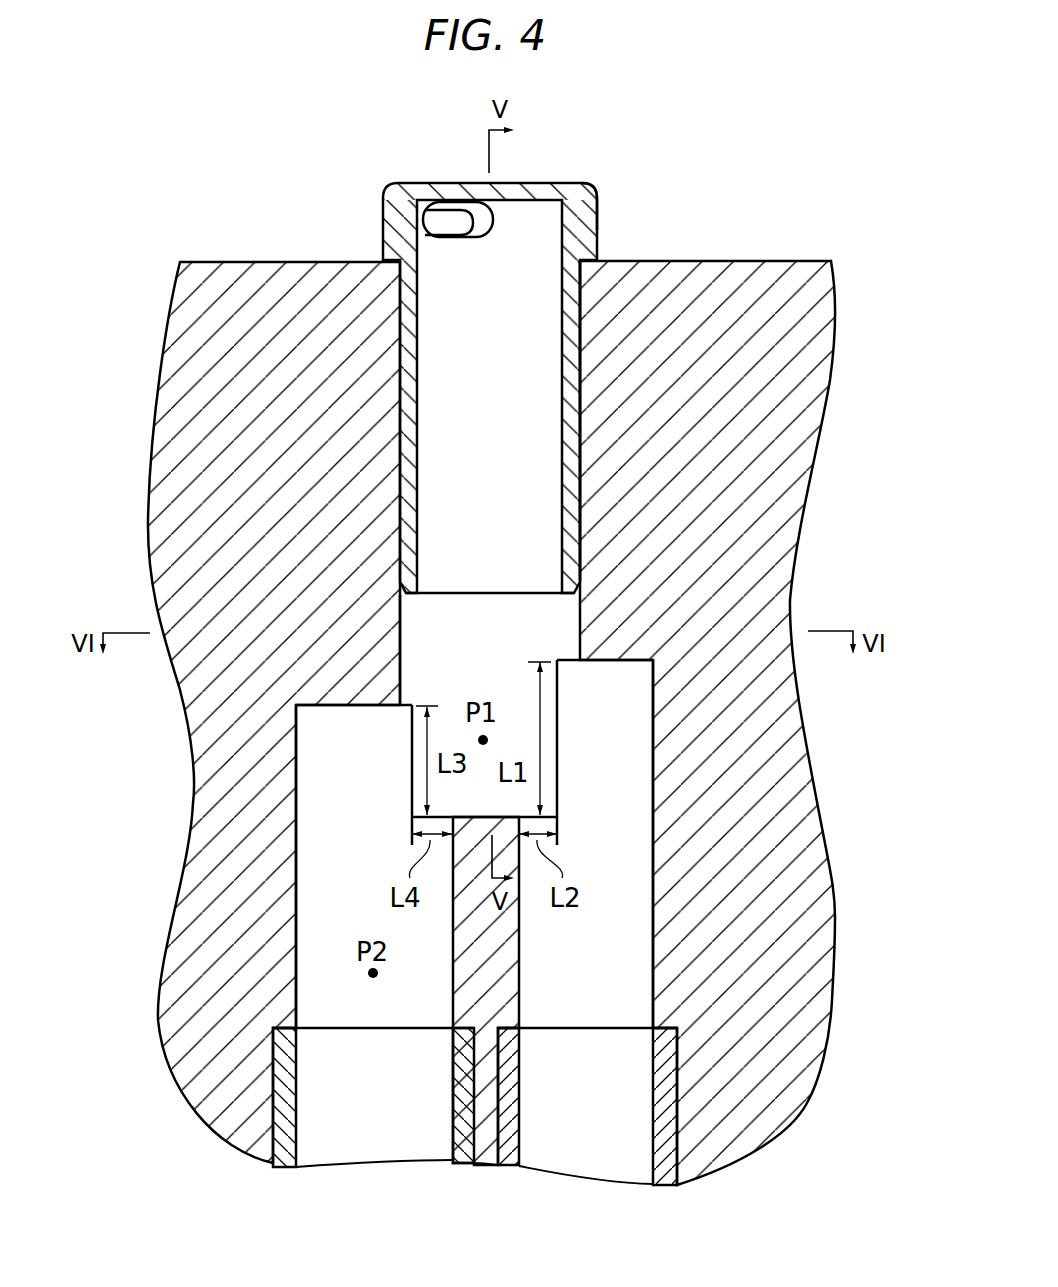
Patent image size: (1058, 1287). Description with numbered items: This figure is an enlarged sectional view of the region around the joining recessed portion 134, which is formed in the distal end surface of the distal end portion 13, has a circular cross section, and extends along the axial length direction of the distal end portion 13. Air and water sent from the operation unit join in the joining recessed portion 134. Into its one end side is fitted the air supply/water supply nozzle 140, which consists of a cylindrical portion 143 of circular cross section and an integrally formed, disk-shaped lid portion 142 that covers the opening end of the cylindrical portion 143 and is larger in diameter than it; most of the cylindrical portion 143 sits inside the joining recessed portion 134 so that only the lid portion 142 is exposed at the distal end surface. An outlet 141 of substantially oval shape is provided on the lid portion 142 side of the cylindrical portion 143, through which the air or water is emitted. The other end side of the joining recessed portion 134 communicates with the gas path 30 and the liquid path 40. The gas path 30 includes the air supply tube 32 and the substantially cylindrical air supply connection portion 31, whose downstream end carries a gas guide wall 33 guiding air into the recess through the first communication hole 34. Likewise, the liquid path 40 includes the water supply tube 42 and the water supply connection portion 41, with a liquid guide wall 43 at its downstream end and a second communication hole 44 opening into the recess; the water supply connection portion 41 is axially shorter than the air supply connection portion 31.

The distal end portion 13 is at (797, 392).
The air supply/water supply nozzle 140 is at (627, 206).
The outlet 141 is at (472, 212).
The lid portion 142 is at (580, 203).
The cylindrical portion 143 is at (566, 322).
The joining recessed portion 134 is at (402, 650).
The liquid guide wall 43 is at (347, 708).
The second communication hole 44 is at (380, 785).
The water supply connection portion 41 is at (298, 969).
The water supply tube 42 is at (288, 1124).
The liquid path 40 is at (266, 1136).
The gas guide wall 33 is at (640, 668).
The air supply connection portion 31 is at (653, 714).
The first communication hole 34 is at (582, 793).
The air supply tube 32 is at (668, 1125).
The gas path 30 is at (696, 1143).